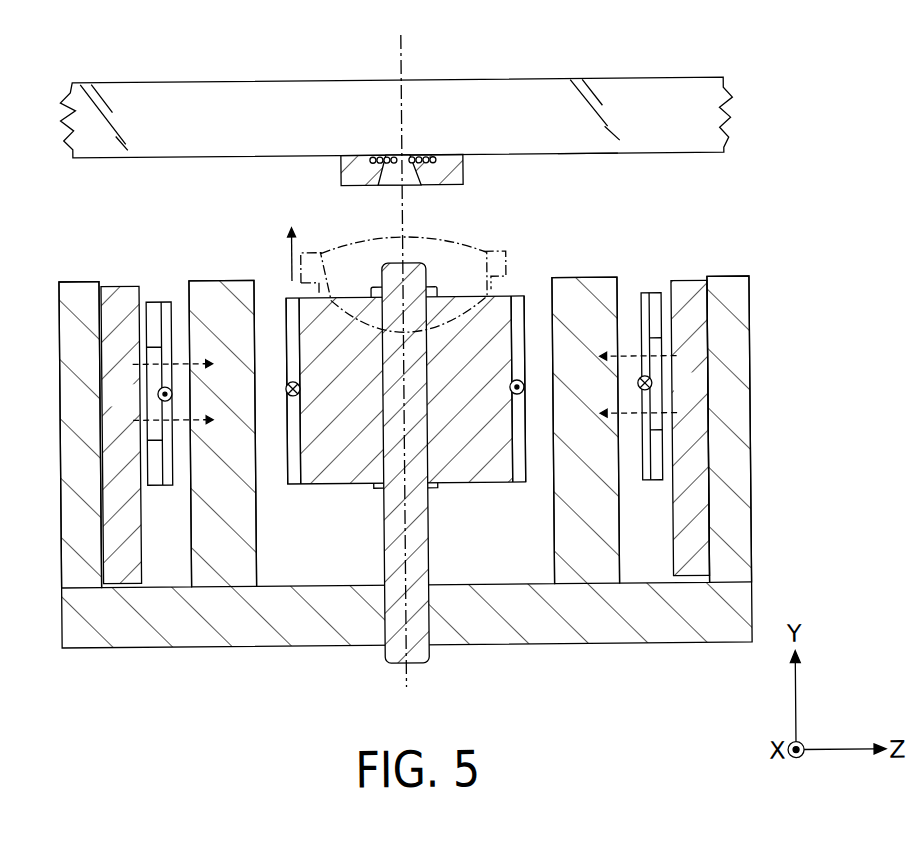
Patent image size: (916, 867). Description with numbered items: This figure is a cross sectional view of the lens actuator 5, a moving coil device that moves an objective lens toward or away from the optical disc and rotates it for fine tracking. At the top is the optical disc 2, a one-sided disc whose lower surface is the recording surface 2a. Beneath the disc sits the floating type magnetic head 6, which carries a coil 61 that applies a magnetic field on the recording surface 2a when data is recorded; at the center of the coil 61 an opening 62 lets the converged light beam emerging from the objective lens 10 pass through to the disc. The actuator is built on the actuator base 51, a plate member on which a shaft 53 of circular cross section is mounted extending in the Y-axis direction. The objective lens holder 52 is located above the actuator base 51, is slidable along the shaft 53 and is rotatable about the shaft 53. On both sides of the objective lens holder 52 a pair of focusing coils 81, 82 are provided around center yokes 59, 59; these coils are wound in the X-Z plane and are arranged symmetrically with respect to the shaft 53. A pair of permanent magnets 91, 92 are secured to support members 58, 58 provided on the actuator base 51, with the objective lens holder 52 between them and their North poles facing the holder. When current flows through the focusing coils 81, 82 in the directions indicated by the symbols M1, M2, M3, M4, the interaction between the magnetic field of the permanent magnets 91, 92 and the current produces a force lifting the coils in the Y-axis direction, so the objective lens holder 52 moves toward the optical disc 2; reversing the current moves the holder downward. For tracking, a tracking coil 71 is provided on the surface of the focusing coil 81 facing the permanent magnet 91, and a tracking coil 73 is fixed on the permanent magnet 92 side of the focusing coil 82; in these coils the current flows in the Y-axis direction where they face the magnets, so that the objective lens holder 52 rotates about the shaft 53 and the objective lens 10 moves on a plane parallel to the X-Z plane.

The optical disc 2 is at (268, 102).
The recording surface 2a is at (590, 156).
The magnetic head 6 is at (422, 171).
The coil 61 is at (440, 160).
The opening 62 is at (393, 178).
The objective lens 10 is at (343, 245).
The lens actuator 5 is at (218, 687).
The actuator base 51 is at (300, 646).
The support member 58 is at (70, 472).
The center yoke 59 is at (238, 543).
The objective lens holder 52 is at (463, 463).
The shaft 53 is at (398, 548).
The focusing coil 82 is at (168, 322).
The focusing coil 81 is at (532, 315).
The permanent magnet 92 is at (110, 292).
The permanent magnet 91 is at (697, 287).
The tracking coil 73 is at (157, 312).
The tracking coil 71 is at (653, 300).
The current direction symbol M1 is at (188, 422).
The current direction symbol M2 is at (290, 396).
The current direction symbol M3 is at (523, 396).
The current direction symbol M4 is at (645, 393).